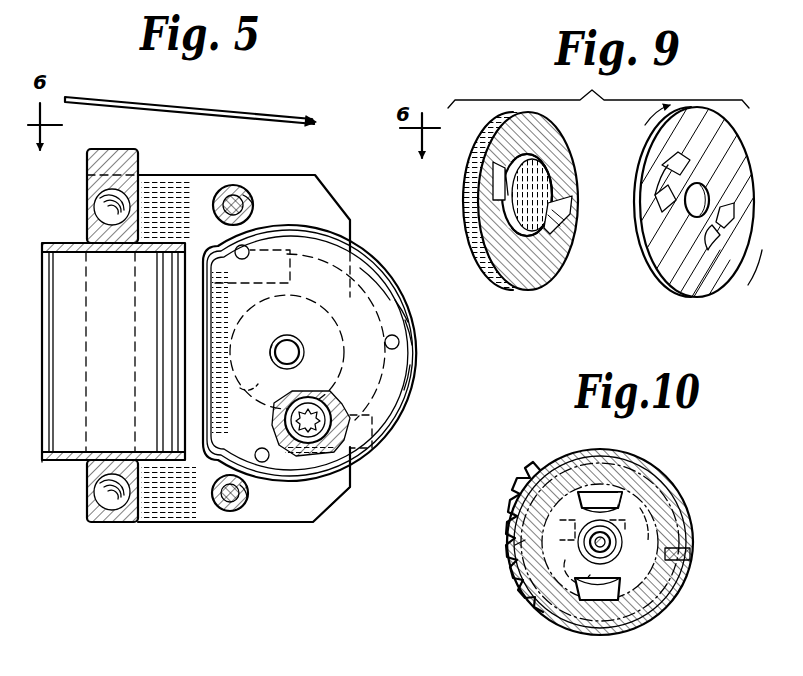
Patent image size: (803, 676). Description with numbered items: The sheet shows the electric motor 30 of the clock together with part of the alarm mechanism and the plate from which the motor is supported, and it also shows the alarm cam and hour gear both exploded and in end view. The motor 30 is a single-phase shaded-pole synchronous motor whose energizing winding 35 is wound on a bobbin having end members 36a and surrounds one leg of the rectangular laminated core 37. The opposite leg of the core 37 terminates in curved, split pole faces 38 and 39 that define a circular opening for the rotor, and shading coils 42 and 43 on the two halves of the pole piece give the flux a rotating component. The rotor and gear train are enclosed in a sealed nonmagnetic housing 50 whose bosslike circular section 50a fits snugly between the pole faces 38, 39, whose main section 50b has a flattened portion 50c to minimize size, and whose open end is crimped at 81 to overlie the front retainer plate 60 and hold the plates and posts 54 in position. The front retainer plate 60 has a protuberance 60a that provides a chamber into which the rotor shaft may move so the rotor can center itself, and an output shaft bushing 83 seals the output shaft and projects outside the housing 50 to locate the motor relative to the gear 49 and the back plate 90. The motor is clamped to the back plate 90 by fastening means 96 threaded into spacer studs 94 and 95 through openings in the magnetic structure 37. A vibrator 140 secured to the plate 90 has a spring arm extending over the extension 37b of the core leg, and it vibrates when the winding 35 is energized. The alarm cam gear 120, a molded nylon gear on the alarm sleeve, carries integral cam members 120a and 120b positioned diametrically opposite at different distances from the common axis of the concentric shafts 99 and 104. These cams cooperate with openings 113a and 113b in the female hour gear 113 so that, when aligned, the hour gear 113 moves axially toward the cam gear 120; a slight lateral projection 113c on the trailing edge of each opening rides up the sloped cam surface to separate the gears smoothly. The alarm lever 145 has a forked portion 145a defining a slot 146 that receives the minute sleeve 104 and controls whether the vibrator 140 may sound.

In FIG. 5, the electric motor 30 is at (40, 551).
In FIG. 5, the energizing winding 35 is at (44, 265).
In FIG. 5, the end members 36a is at (72, 246).
In FIG. 5, the laminated core 37 is at (170, 188).
In FIG. 5, the extension 37b is at (100, 150).
In FIG. 5, the pole face 38 is at (336, 304).
In FIG. 5, the pole face 39 is at (250, 386).
In FIG. 5, the shading coil 42 is at (276, 248).
In FIG. 5, the shading coil 43 is at (364, 458).
In FIG. 5, the gear 49 is at (330, 404).
In FIG. 5, the rotor and gear housing 50 is at (412, 331).
In FIG. 5, the bosslike circular section 50a is at (366, 272).
In FIG. 5, the main section 50b is at (410, 326).
In FIG. 5, the flattened portion 50c is at (204, 412).
In FIG. 5, the posts 54 is at (232, 248).
In FIG. 5, the front retainer plate 60 is at (400, 373).
In FIG. 5, the protuberance 60a is at (284, 342).
In FIG. 5, the crimped portion 81 is at (396, 300).
In FIG. 5, the output shaft bushing 83 is at (328, 470).
In FIG. 5, the back plate 90 is at (340, 486).
In FIG. 5, the spacer stud 94 is at (243, 195).
In FIG. 5, the spacer stud 95 is at (245, 508).
In FIG. 5, the fastening means 96 is at (236, 196).
In FIG. 10, the shaft 99 is at (612, 542).
In FIG. 10, the minute shaft 104 is at (590, 536).
In FIG. 9, the hour gear 113 is at (683, 292).
In FIG. 10, the hour gear 113 is at (690, 592).
In FIG. 9, the opening 113a is at (735, 215).
In FIG. 10, the opening 113a is at (600, 490).
In FIG. 9, the opening 113b is at (660, 205).
In FIG. 10, the opening 113b is at (690, 574).
In FIG. 9, the lateral projection 113c is at (678, 157).
In FIG. 10, the lateral projection 113c is at (622, 500).
In FIG. 9, the alarm cam gear 120 is at (552, 262).
In FIG. 10, the alarm cam gear 120 is at (510, 568).
In FIG. 9, the cam member 120a is at (570, 208).
In FIG. 10, the cam member 120a is at (515, 548).
In FIG. 9, the cam member 120b is at (495, 185).
In FIG. 10, the cam member 120b is at (668, 556).
In FIG. 5, the vibrator 140 is at (268, 112).
In FIG. 10, the alarm lever 145 is at (545, 600).
In FIG. 10, the forked portion 145a is at (585, 582).
In FIG. 10, the slot 146 is at (625, 522).